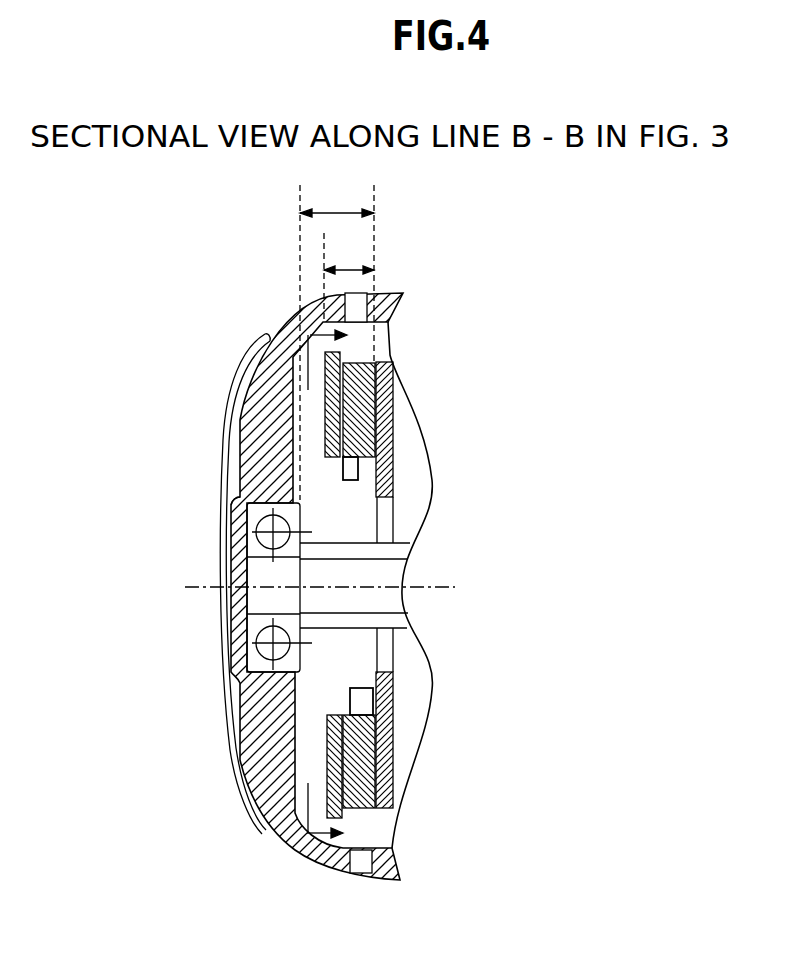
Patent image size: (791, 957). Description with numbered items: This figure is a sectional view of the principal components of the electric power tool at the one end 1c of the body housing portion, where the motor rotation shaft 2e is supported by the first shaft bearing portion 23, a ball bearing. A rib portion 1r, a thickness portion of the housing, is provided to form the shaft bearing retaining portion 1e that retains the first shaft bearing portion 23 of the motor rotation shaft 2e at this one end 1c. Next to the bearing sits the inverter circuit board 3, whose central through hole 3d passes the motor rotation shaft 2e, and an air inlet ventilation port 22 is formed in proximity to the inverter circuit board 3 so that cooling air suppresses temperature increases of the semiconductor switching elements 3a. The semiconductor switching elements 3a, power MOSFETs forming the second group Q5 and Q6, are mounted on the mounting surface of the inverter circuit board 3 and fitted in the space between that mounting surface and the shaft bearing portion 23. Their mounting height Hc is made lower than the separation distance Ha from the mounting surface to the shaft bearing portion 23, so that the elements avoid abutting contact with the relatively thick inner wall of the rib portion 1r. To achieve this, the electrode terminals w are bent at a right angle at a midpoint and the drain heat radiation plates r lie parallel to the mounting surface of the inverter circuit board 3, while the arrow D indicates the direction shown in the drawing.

The one end of the body housing portion 1c is at (228, 398).
The rib portion 1r is at (260, 443).
The shaft bearing retaining portion 1e is at (240, 480).
The first shaft bearing portion 23 is at (240, 513).
The air inlet ventilation port 22 is at (358, 312).
The motor rotation shaft 2e is at (398, 570).
The inverter circuit board 3 is at (398, 385).
The semiconductor switching elements 3a is at (362, 437).
The through hole 3d is at (388, 498).
The separation distance Ha is at (337, 340).
The mounting height Hc is at (349, 276).
The direction D is at (338, 586).
The heat radiation plate r is at (317, 460).
The electrode terminals w is at (352, 470).